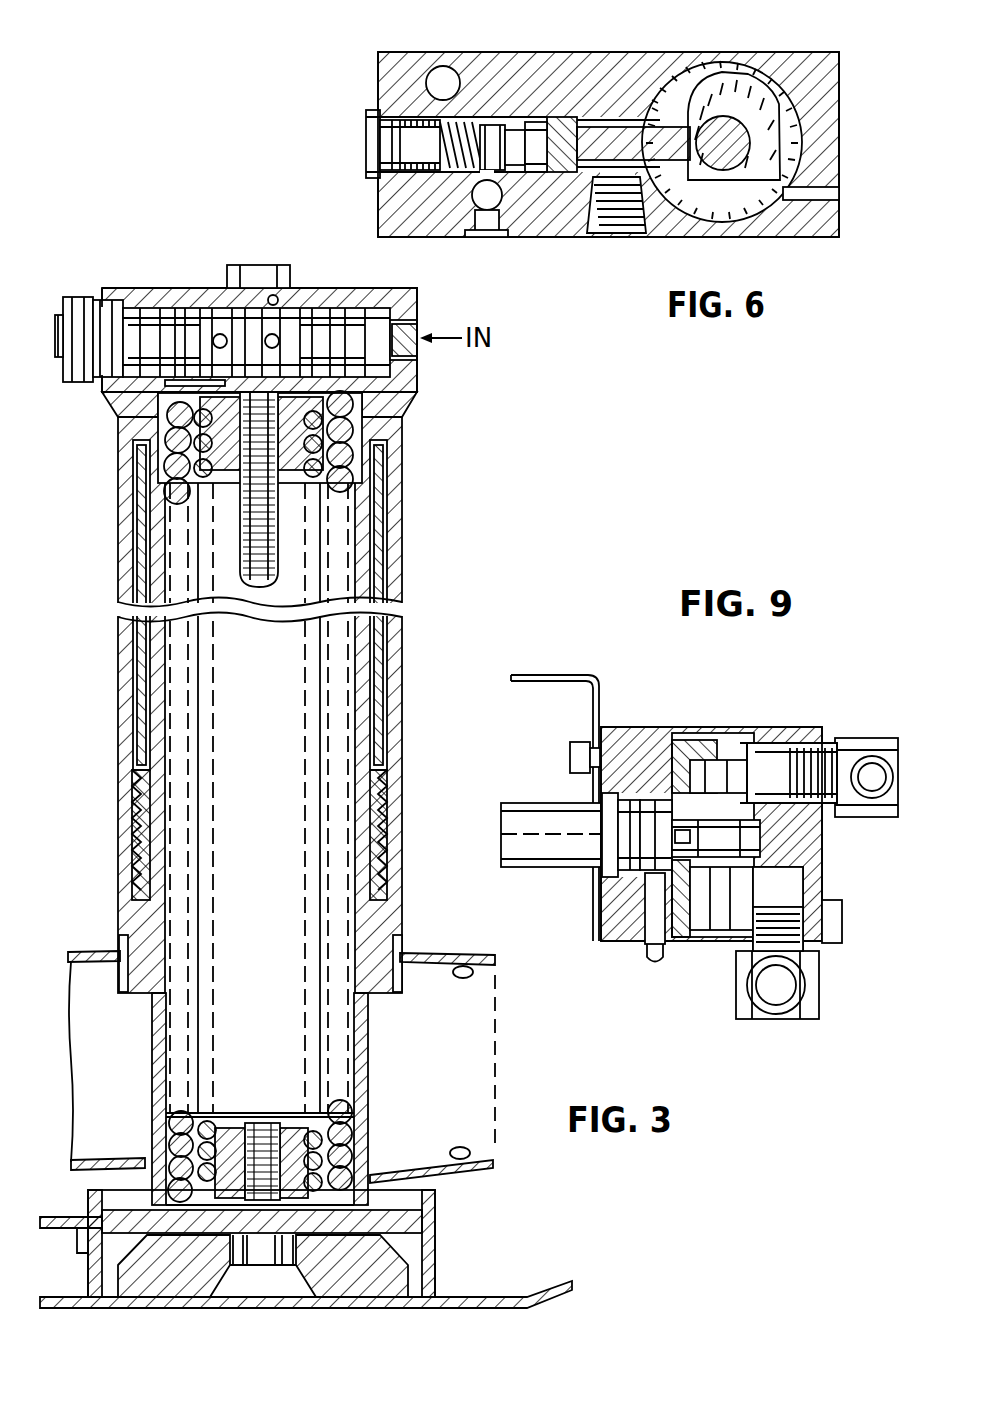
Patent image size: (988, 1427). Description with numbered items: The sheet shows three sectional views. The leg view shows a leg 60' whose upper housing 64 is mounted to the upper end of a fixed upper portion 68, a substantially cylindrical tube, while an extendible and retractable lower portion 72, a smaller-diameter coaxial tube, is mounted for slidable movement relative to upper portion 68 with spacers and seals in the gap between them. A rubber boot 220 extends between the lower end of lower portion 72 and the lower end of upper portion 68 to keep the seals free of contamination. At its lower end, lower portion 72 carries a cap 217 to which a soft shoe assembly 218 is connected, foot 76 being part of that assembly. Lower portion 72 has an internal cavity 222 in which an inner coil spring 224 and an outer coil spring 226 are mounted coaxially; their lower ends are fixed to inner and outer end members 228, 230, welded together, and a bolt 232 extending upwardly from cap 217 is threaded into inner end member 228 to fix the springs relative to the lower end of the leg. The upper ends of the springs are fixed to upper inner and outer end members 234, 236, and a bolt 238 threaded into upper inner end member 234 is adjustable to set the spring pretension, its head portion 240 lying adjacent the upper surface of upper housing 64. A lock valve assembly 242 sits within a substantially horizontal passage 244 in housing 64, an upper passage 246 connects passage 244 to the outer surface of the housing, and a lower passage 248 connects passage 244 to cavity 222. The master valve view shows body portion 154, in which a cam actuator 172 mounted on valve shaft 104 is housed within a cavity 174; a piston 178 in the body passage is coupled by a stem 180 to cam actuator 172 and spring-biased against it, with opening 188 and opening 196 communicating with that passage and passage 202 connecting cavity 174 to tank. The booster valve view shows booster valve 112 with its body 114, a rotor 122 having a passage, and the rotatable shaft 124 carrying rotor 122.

In FIG. 6, the body portion 154 is at (536, 52).
In FIG. 6, the piston 178 is at (587, 118).
In FIG. 6, the stem 180 is at (670, 117).
In FIG. 6, the cam actuator 172 is at (768, 52).
In FIG. 6, the valve shaft 104 is at (832, 103).
In FIG. 6, the cavity 174 is at (745, 150).
In FIG. 6, the passage 202 is at (820, 184).
In FIG. 6, the opening 188 is at (487, 210).
In FIG. 6, the opening 196 is at (616, 215).
In FIG. 3, the upper housing 64 is at (126, 264).
In FIG. 3, the lock valve assembly 242 is at (90, 275).
In FIG. 3, the head portion 240 is at (258, 266).
In FIG. 3, the upper passage 246 is at (278, 300).
In FIG. 3, the fixed upper portion 68 is at (402, 580).
In FIG. 3, the bolt 238 is at (358, 563).
In FIG. 3, the internal cavity 222 is at (290, 821).
In FIG. 3, the upper outer end member 236 is at (188, 500).
In FIG. 3, the upper inner end member 234 is at (214, 478).
In FIG. 3, the horizontal passage 244 is at (217, 372).
In FIG. 3, the lower passage 248 is at (217, 381).
In FIG. 3, the cylinder assembly 60' is at (462, 470).
In FIG. 3, the rubber boot 220 is at (441, 952).
In FIG. 3, the extendible and retractable lower portion 72 is at (151, 1063).
In FIG. 3, the outer coil spring 226 is at (174, 1115).
In FIG. 3, the inner coil spring 224 is at (207, 1120).
In FIG. 3, the outer end member 230 is at (328, 1108).
In FIG. 3, the inner end member 228 is at (292, 1118).
In FIG. 3, the bolt 232 is at (254, 1123).
In FIG. 3, the soft shoe assembly 218 is at (517, 1204).
In FIG. 3, the cap 217 is at (397, 1237).
In FIG. 3, the foot 76 is at (487, 1297).
In FIG. 9, the booster valve 112 is at (824, 697).
In FIG. 9, the body 114 is at (669, 690).
In FIG. 9, the rotor 122 is at (704, 741).
In FIG. 9, the rotatable shaft 124 is at (711, 848).